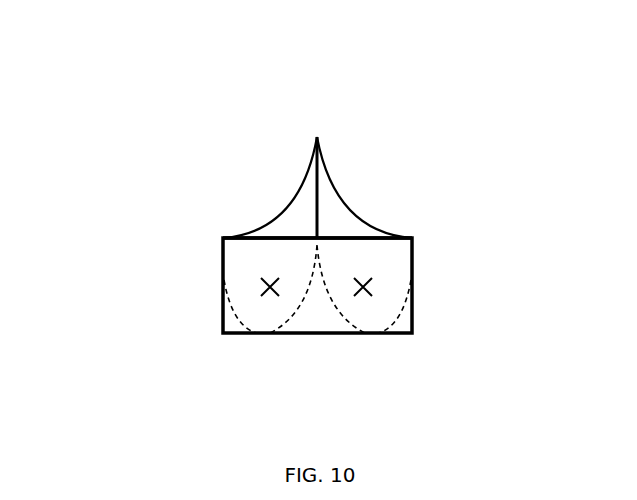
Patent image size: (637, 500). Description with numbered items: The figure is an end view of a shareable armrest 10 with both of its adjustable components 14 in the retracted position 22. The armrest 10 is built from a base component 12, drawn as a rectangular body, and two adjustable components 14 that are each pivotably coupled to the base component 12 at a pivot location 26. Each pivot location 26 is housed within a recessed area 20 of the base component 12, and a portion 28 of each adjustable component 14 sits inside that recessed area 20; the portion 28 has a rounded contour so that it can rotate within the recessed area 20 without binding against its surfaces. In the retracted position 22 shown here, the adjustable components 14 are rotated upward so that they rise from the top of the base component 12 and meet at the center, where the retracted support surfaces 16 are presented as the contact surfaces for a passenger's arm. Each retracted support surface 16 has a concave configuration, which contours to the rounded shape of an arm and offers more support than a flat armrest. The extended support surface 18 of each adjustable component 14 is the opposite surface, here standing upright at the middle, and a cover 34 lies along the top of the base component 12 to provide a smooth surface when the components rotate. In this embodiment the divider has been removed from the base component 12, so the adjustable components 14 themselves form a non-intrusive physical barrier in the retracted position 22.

The armrest 10 is at (293, 220).
The base component 12 is at (222, 318).
The adjustable component 14 is at (395, 268).
The retracted support surface 16 is at (345, 208).
The extended support surface 18 is at (313, 202).
The recessed area 20 is at (317, 317).
The retracted position 22 is at (179, 240).
The pivot location 26 is at (365, 293).
The portion 28 is at (230, 296).
The cover 34 is at (348, 236).